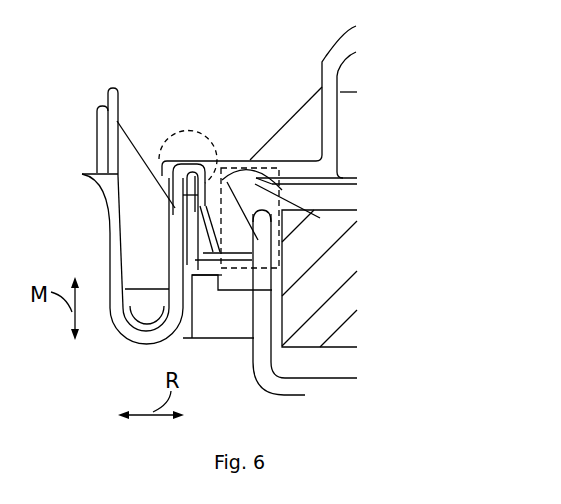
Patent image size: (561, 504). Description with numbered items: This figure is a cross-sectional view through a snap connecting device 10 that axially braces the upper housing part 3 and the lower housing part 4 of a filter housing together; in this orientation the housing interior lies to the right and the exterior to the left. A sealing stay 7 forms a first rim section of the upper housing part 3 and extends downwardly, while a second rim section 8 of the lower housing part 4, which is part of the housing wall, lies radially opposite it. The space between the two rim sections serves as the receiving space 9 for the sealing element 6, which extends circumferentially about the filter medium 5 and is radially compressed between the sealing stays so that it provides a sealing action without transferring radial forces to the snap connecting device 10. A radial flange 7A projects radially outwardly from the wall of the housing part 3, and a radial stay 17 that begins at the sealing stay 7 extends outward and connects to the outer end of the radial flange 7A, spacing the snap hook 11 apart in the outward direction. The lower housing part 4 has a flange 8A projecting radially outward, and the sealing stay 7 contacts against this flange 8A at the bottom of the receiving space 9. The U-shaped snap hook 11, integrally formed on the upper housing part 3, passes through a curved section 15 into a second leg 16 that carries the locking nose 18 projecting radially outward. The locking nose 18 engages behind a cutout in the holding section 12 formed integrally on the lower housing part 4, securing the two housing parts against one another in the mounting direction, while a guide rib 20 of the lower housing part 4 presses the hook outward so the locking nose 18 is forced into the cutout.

The upper housing part 3 is at (333, 54).
The lower housing part 4 is at (290, 382).
The filter medium 5 is at (338, 298).
The sealing element 6 is at (269, 160).
The sealing stay 7 is at (208, 212).
The radial flange 7A is at (263, 195).
The second rim section 8 is at (262, 245).
The flange 8A is at (237, 267).
The receiving space 9 is at (232, 164).
The snap connecting device 10 is at (130, 50).
The snap hook 11 is at (150, 97).
The holding section 12 is at (101, 118).
The curved section 15 is at (148, 343).
The second leg 16 is at (118, 265).
The radial stay 17 is at (187, 140).
The locking nose 18 is at (106, 187).
The guide rib 20 is at (238, 315).